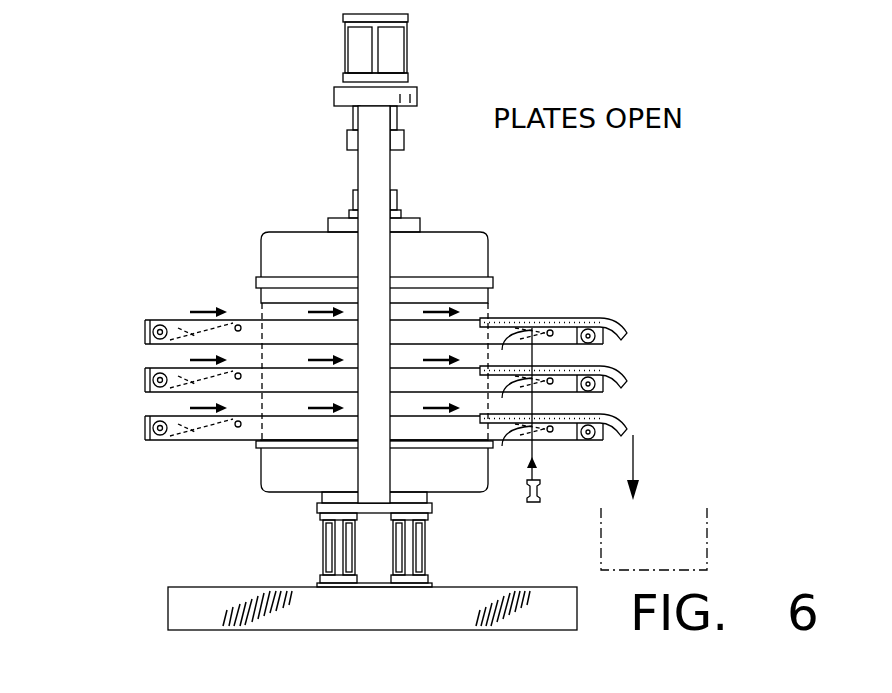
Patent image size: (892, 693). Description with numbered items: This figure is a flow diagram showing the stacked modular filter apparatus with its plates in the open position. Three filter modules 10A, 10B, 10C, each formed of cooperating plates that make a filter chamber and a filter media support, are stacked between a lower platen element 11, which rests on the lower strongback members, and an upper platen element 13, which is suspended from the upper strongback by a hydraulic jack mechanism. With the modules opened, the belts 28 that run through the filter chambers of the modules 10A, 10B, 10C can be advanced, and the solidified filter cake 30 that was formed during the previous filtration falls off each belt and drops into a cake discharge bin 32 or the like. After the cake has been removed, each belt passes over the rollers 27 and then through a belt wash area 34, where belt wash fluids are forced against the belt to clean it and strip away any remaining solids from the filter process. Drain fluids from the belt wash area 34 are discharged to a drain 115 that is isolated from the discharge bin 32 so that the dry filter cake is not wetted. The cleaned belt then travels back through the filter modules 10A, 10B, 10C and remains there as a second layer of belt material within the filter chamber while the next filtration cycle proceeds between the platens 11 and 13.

The filter module 10A is at (280, 337).
The filter module 10B is at (283, 380).
The filter module 10C is at (292, 430).
The lower platen element 11 is at (453, 478).
The upper platen element 13 is at (453, 252).
The rollers 27 is at (556, 367).
The belts 28 is at (185, 428).
The filter cake 30 is at (595, 417).
The cake discharge bin 32 is at (648, 536).
The belt wash area 34 is at (502, 350).
The drain 115 is at (540, 501).